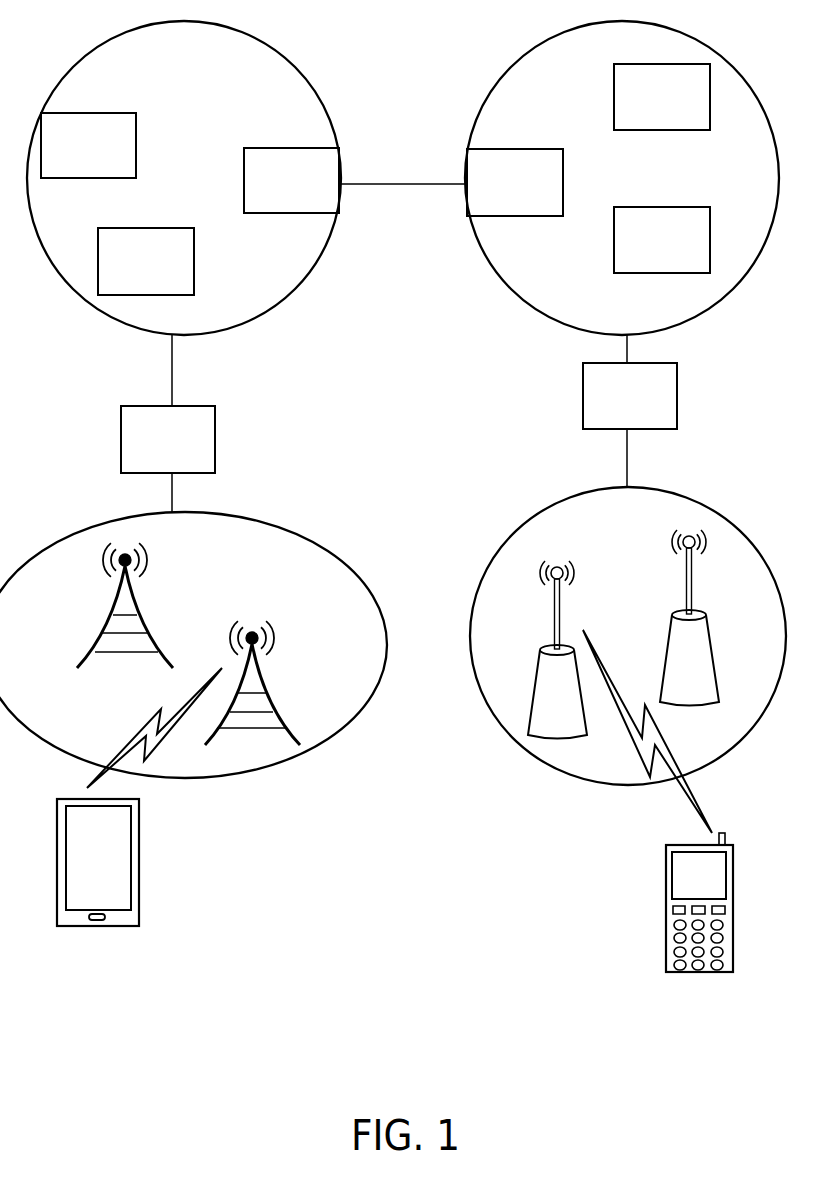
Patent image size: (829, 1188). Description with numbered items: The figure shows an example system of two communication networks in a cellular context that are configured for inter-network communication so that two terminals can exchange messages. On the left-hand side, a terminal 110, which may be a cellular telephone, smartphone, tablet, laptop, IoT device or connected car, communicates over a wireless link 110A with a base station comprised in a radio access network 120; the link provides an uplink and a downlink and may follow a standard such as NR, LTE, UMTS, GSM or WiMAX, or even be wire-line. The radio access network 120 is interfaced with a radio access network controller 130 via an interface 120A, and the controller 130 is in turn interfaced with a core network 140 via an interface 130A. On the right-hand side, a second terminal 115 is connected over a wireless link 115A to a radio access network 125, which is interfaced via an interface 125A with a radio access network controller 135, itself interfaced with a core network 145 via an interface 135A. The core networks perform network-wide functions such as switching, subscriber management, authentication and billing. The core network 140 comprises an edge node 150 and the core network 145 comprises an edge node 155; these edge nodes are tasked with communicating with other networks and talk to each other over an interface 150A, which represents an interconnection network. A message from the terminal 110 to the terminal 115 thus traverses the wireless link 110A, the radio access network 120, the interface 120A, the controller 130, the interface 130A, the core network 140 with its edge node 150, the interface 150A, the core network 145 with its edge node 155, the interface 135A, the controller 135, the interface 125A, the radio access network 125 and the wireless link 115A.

The terminal 110 is at (100, 926).
The wireless link 110A is at (162, 740).
The terminal 115 is at (700, 972).
The wireless link 115A is at (622, 725).
The radio access network 120 is at (320, 661).
The interface 120A is at (172, 490).
The radio access network 125 is at (565, 533).
The interface 125A is at (627, 447).
The radio access network controller 130 is at (153, 450).
The interface 130A is at (172, 378).
The radio access network controller 135 is at (649, 405).
The interface 135A is at (627, 352).
The core network 140 is at (228, 280).
The core network 145 is at (545, 280).
The edge node 150 is at (274, 193).
The interface 150A is at (393, 184).
The edge node 155 is at (497, 196).